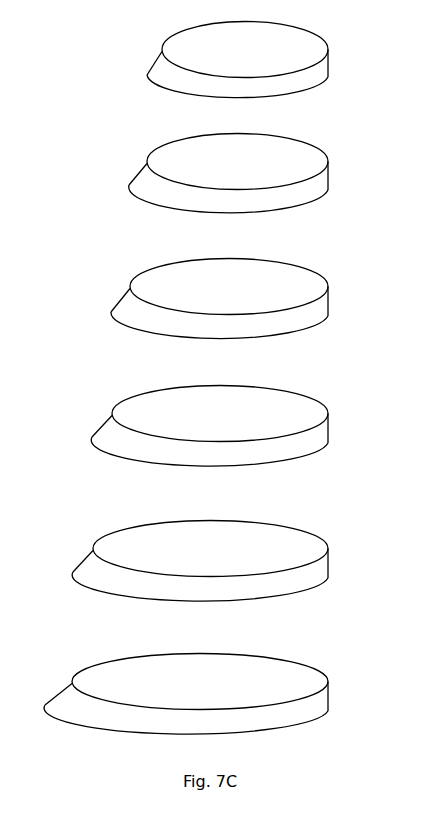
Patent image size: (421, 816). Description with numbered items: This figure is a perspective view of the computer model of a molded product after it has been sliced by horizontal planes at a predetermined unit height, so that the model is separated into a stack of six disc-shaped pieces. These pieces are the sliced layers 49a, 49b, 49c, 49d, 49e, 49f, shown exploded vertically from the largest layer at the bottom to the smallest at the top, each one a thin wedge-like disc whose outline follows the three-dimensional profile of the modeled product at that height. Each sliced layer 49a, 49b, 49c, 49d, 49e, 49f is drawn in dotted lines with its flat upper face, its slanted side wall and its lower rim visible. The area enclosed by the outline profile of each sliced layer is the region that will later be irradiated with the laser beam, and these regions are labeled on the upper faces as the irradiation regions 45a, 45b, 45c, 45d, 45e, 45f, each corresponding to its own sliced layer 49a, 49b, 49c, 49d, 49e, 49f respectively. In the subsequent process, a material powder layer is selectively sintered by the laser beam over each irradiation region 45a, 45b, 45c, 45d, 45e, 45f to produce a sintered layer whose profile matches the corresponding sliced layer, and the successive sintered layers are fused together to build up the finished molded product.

The irradiation region 45a is at (219, 694).
The irradiation region 45b is at (237, 561).
The irradiation region 45c is at (246, 426).
The irradiation region 45d is at (257, 299).
The irradiation region 45e is at (265, 173).
The irradiation region 45f is at (271, 60).
The sliced layer 49a is at (328, 696).
The sliced layer 49b is at (324, 565).
The sliced layer 49c is at (324, 436).
The sliced layer 49d is at (324, 303).
The sliced layer 49e is at (322, 176).
The sliced layer 49f is at (322, 67).